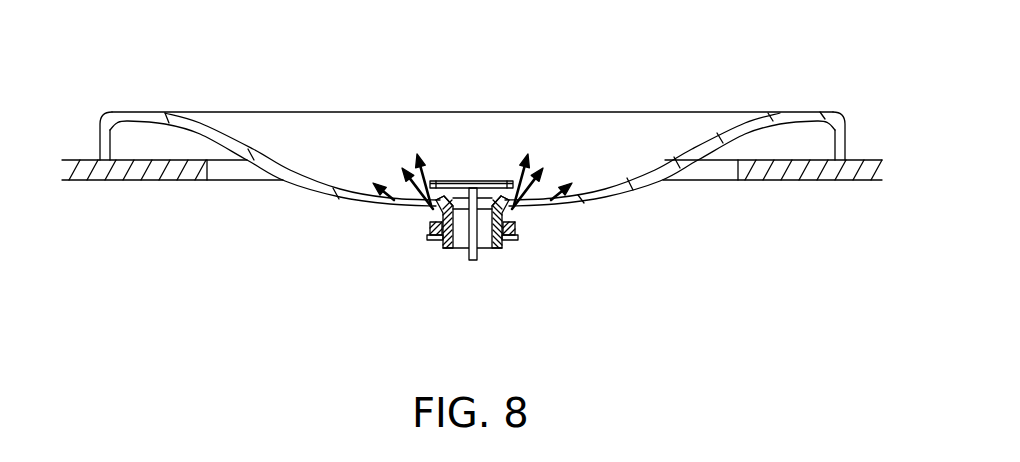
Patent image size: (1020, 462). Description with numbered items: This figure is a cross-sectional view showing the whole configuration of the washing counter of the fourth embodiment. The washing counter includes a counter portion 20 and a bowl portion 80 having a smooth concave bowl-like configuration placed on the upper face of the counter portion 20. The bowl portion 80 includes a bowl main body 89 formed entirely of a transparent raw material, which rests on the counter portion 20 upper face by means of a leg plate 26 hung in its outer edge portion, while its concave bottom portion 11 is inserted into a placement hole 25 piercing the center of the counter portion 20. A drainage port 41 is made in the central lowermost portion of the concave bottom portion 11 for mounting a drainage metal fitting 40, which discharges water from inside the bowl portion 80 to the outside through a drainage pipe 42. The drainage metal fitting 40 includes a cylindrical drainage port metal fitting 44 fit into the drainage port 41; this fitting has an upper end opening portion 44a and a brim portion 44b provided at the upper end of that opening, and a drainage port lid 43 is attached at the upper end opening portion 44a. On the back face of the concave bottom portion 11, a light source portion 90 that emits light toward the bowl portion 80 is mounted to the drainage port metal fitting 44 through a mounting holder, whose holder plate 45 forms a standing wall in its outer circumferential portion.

The concave bottom portion 11 is at (553, 178).
The counter portion 20 is at (121, 181).
The placement hole 25 is at (243, 172).
The leg plate 26 is at (98, 130).
The drainage metal fitting 40 is at (484, 178).
The drainage port 41 is at (412, 165).
The drainage pipe 42 is at (497, 250).
The drainage port lid 43 is at (466, 181).
The drainage port metal fitting 44 is at (440, 212).
The upper end opening portion 44a is at (489, 203).
The brim portion 44b is at (506, 212).
The holder plate 45 is at (435, 243).
The bowl portion 80 is at (695, 72).
The bowl main body 89 is at (301, 136).
The light source portion 90 is at (430, 227).